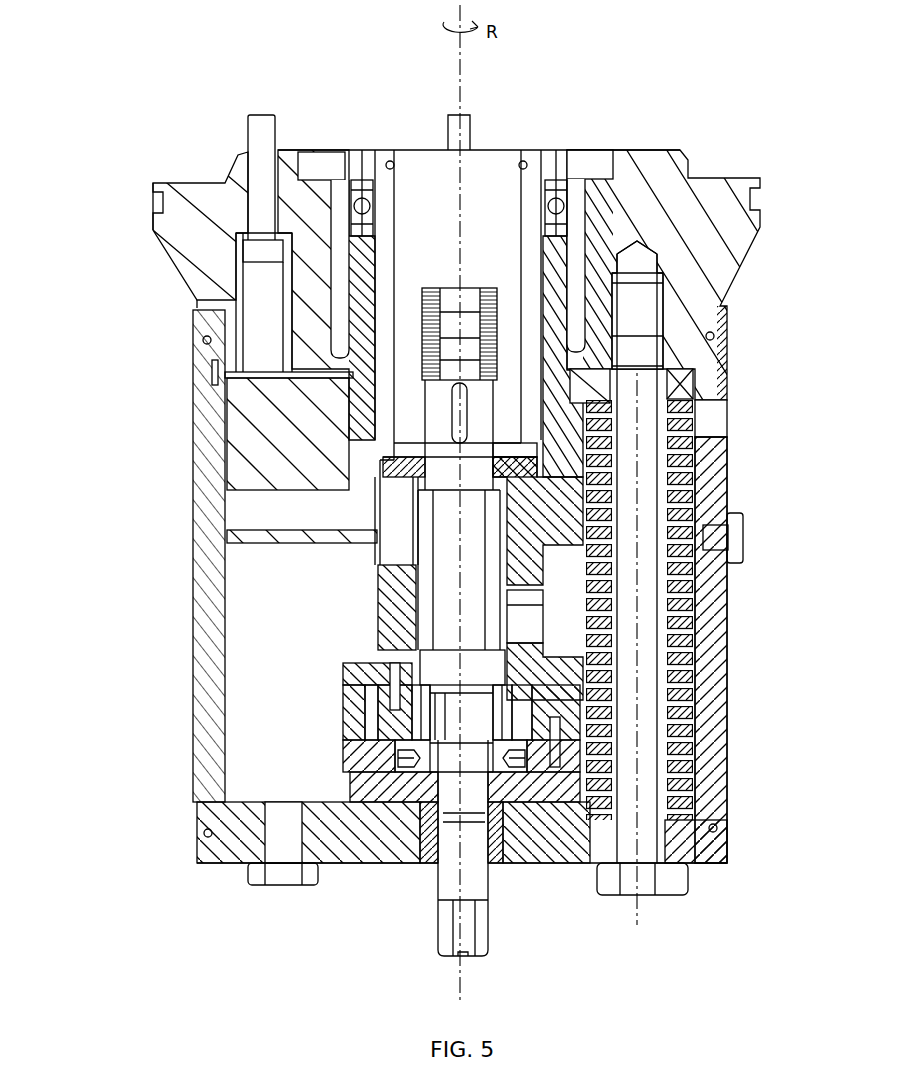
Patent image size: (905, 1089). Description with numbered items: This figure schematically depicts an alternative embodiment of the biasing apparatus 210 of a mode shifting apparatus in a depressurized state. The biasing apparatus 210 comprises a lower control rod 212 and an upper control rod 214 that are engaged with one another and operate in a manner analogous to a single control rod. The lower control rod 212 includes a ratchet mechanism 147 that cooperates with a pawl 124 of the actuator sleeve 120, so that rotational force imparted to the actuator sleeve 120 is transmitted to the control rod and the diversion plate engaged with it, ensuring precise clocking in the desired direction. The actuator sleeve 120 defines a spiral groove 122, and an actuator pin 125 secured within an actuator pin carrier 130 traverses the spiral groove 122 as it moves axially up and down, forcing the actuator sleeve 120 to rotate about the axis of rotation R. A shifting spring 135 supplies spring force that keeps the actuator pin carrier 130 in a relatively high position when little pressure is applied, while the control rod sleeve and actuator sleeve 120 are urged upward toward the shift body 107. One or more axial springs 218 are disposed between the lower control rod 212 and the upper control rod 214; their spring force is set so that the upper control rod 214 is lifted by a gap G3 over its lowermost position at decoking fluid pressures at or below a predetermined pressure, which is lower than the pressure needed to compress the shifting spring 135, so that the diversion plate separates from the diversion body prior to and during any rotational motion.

The biasing apparatus 210 is at (140, 495).
The upper control rod 214 is at (523, 148).
The axial springs 218 is at (498, 304).
The lower control rod 212 is at (482, 880).
The actuator pin carrier 130 is at (237, 443).
The actuator pin 125 is at (393, 522).
The actuator sleeve 120 is at (380, 595).
The spiral groove 122 is at (525, 613).
The pawl 124 is at (383, 670).
The ratchet mechanism 147 is at (397, 735).
The shifting spring 135 is at (683, 493).
The shift body 107 is at (715, 662).
The gap G3 is at (507, 467).